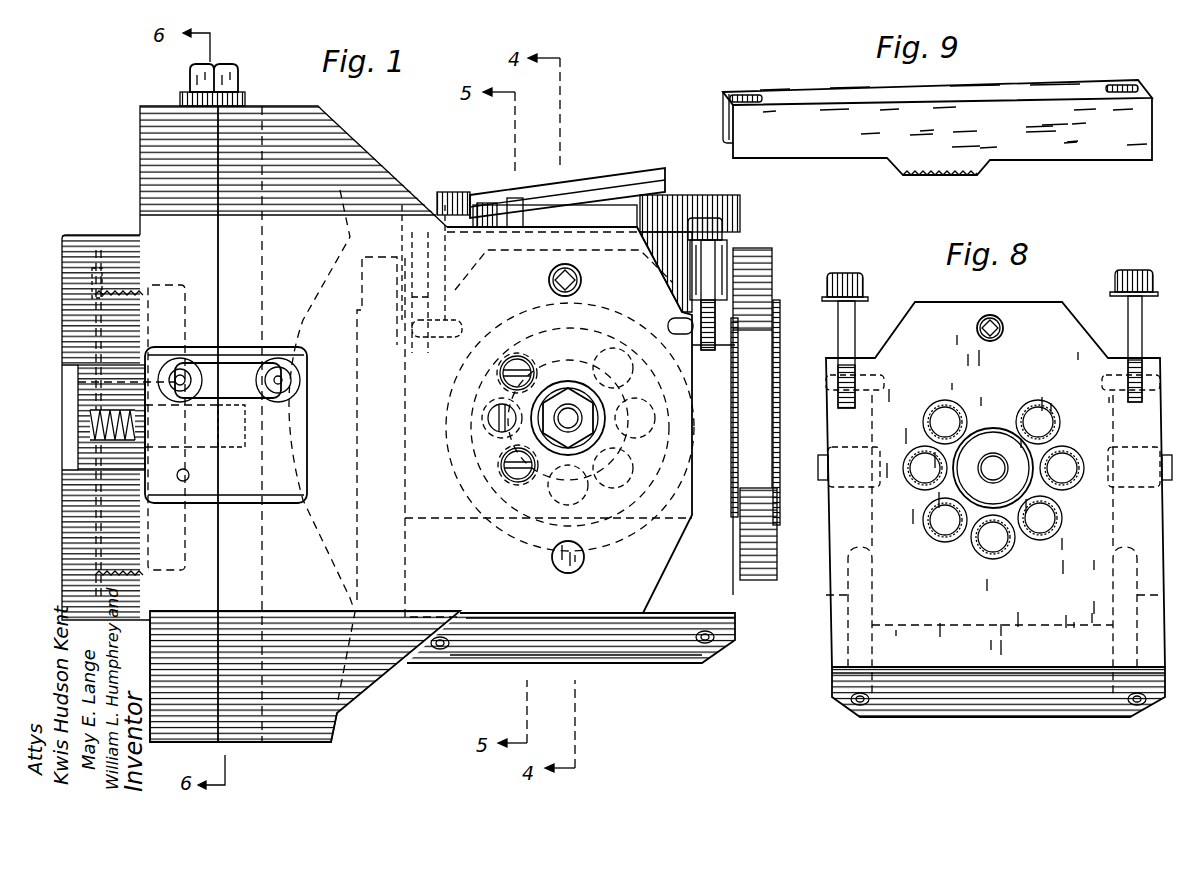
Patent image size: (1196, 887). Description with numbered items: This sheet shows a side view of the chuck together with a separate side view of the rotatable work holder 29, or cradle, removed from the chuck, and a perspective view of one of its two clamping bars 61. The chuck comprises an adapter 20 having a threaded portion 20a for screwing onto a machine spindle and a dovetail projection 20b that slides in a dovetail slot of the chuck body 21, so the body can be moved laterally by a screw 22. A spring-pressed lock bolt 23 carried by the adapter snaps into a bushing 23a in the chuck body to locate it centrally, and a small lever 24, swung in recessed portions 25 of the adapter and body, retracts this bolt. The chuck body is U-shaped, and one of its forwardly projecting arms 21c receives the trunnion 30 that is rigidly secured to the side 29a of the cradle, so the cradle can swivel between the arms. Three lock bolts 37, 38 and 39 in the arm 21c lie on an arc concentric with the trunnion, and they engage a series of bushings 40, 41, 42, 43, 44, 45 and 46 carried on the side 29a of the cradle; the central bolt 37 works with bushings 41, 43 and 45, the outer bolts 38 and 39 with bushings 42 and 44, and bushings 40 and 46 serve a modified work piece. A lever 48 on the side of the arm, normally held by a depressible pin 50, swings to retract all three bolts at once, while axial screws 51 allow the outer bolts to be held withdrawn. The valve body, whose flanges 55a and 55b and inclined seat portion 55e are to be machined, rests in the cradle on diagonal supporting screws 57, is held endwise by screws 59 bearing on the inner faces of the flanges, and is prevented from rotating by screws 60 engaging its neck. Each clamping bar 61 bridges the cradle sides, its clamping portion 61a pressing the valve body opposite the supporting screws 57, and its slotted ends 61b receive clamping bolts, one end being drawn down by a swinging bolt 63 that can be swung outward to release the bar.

In FIG. 1, the adapter 20 is at (148, 150).
In FIG. 1, the threaded portion 20a is at (123, 290).
In FIG. 1, the dovetail projection 20b is at (82, 570).
In FIG. 1, the chuck body 21 is at (312, 742).
In FIG. 1, the arm of chuck body 21c is at (648, 555).
In FIG. 1, the screw 22 is at (235, 85).
In FIG. 1, the lock bolt 23 is at (205, 445).
In FIG. 1, the bushing 23a is at (248, 425).
In FIG. 1, the lever 24 is at (228, 372).
In FIG. 1, the recessed portions 25 is at (220, 500).
In FIG. 1, the work holder 29 is at (600, 633).
In FIG. 8, the work holder 29 is at (1020, 660).
In FIG. 8, the side of cradle 29a is at (1025, 350).
In FIG. 8, the trunnion 30 is at (990, 440).
In FIG. 1, the lock bolt 37 is at (488, 418).
In FIG. 1, the lock bolt 38 is at (503, 373).
In FIG. 1, the lock bolt 39 is at (504, 465).
In FIG. 8, the bushing 40 is at (923, 425).
In FIG. 8, the bushing 41 is at (915, 483).
In FIG. 8, the bushing 42 is at (945, 542).
In FIG. 8, the bushing 43 is at (998, 558).
In FIG. 8, the bushing 44 is at (1062, 522).
In FIG. 8, the bushing 45 is at (1078, 462).
In FIG. 8, the bushing 46 is at (1060, 422).
In FIG. 1, the lever 48 is at (592, 186).
In FIG. 1, the depressible pin 50 is at (515, 205).
In FIG. 1, the screw 51 is at (532, 370).
In FIG. 1, the flange 55a is at (755, 300).
In FIG. 1, the flange 55b is at (355, 345).
In FIG. 1, the valve seat portion 55e is at (665, 205).
In FIG. 1, the supporting screws 57 is at (440, 650).
In FIG. 8, the supporting screws 57 is at (838, 660).
In FIG. 1, the screws 59 is at (740, 410).
In FIG. 8, the screws 59 is at (820, 480).
In FIG. 1, the screws 60 is at (582, 282).
In FIG. 8, the screws 60 is at (1000, 320).
In FIG. 1, the clamping bar 61 is at (722, 268).
In FIG. 9, the clamping bar 61 is at (1078, 142).
In FIG. 9, the clamping portion 61a is at (930, 178).
In FIG. 9, the slot 61b is at (742, 92).
In FIG. 1, the swinging bolt 63 is at (708, 260).
In FIG. 8, the swinging bolt 63 is at (855, 255).